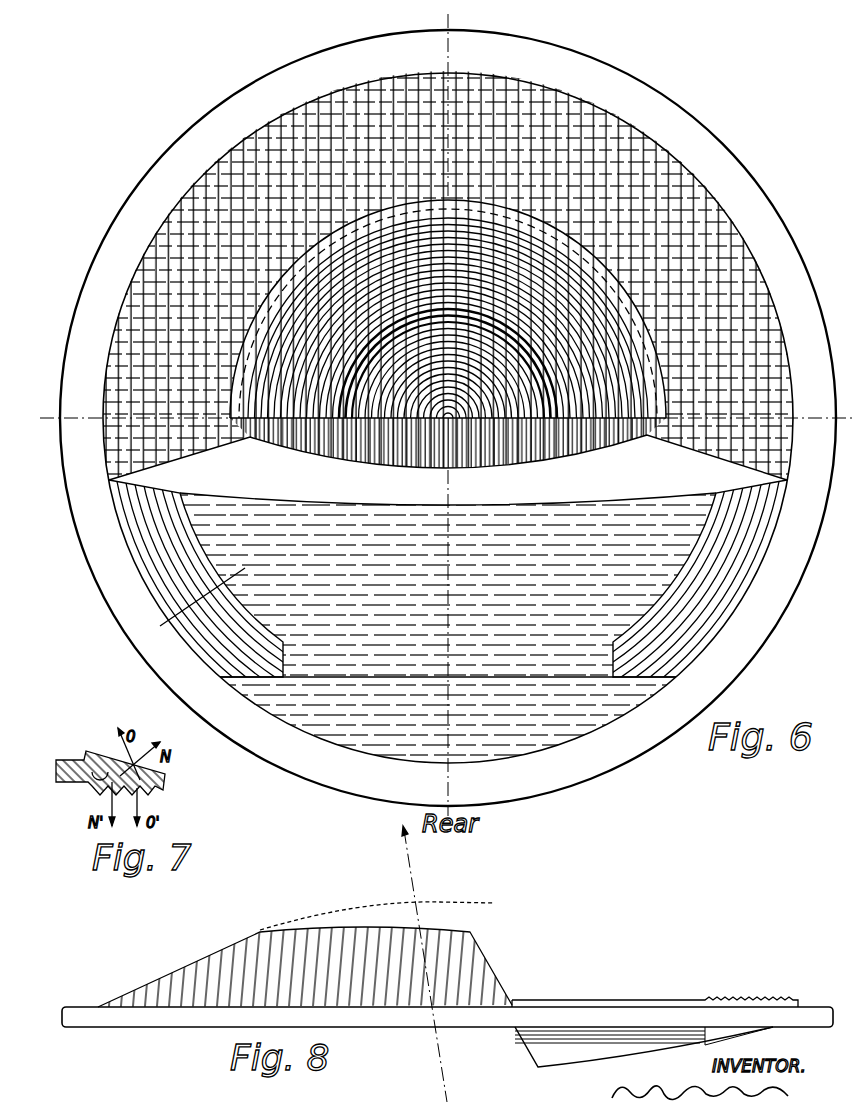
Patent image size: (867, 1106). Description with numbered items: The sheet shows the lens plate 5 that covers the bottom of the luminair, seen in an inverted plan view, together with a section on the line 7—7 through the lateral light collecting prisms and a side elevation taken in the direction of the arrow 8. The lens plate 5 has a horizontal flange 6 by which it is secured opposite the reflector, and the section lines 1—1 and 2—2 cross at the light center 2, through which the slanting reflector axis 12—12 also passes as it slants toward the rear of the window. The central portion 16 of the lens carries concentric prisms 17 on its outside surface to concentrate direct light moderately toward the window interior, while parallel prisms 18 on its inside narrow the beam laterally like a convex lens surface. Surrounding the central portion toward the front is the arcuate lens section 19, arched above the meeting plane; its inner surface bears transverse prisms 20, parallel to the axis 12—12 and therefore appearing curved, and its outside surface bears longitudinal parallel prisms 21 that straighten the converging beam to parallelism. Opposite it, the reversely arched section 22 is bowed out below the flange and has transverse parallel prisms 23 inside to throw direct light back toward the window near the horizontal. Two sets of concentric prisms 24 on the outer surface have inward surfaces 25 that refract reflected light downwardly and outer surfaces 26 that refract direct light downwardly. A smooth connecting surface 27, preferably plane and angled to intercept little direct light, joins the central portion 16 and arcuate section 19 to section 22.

In FIG. 6, the section line 1- 1 is at (450, 40).
In FIG. 6, the light center 2 is at (53, 422).
In FIG. 8, the light center 2 is at (404, 832).
In FIG. 6, the lens plate 5 is at (752, 638).
In FIG. 7, the lens plate 5 is at (60, 758).
In FIG. 8, the lens plate 5 is at (447, 999).
In FIG. 6, the horizontal flange 6 is at (781, 214).
In FIG. 6, the section line 7- 7 is at (199, 598).
In FIG. 6, the arrow 8 is at (770, 137).
In FIG. 8, the slanting axis 12 is at (403, 830).
In FIG. 6, the central portion of lens 16 is at (516, 342).
In FIG. 6, the concentric prisms 17 is at (448, 358).
In FIG. 6, the parallel prisms 18 is at (545, 373).
In FIG. 6, the arcuate lens section 19 is at (694, 193).
In FIG. 8, the arcuate lens section 19 is at (196, 960).
In FIG. 6, the transverse prisms 20 is at (253, 142).
In FIG. 8, the transverse prisms 20 is at (328, 968).
In FIG. 6, the longitudinal parallel prisms 21 is at (334, 98).
In FIG. 6, the reversely arched lens section 22 is at (369, 746).
In FIG. 8, the reversely arched lens section 22 is at (644, 1047).
In FIG. 6, the transverse parallel prisms 23 is at (505, 775).
In FIG. 8, the transverse parallel prisms 23 is at (750, 1000).
In FIG. 6, the concentric prisms 24 is at (760, 564).
In FIG. 7, the concentric prisms 24 is at (84, 756).
In FIG. 7, the interior prism surface 25 is at (158, 794).
In FIG. 7, the outer prism surface 26 is at (96, 792).
In FIG. 6, the smooth connecting surface 27 is at (450, 450).